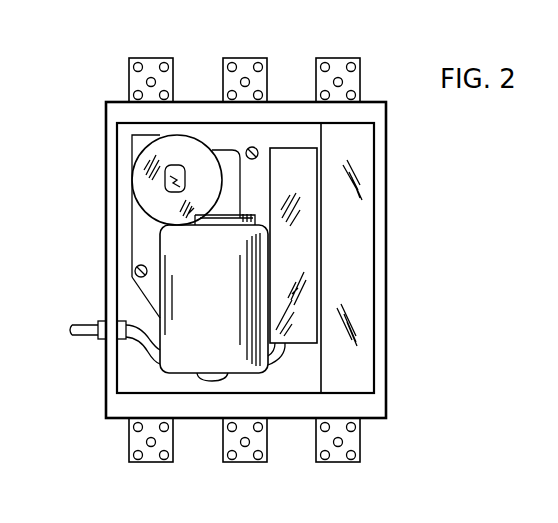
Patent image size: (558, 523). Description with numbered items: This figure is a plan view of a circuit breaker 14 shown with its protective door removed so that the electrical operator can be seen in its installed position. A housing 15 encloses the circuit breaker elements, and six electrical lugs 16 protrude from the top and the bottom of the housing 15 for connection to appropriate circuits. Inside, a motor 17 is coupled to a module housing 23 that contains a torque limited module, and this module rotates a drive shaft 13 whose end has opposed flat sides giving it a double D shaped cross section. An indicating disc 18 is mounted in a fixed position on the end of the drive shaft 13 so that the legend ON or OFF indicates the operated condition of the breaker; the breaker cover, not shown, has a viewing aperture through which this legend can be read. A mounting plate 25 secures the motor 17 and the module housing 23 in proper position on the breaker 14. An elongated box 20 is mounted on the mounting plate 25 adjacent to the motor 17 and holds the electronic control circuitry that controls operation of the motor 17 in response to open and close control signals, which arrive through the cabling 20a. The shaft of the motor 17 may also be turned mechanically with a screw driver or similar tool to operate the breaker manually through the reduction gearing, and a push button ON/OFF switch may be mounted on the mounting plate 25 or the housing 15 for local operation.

The drive shaft 13 is at (160, 165).
The circuit breaker 14 is at (308, 120).
The housing 15 is at (386, 145).
The electrical lugs 16 is at (160, 58).
The motor 17 is at (236, 369).
The indicating disc 18 is at (163, 182).
The elongated box 20 is at (310, 296).
The cabling 20a is at (82, 324).
The module housing 23 is at (232, 186).
The mounting plate 25 is at (137, 245).